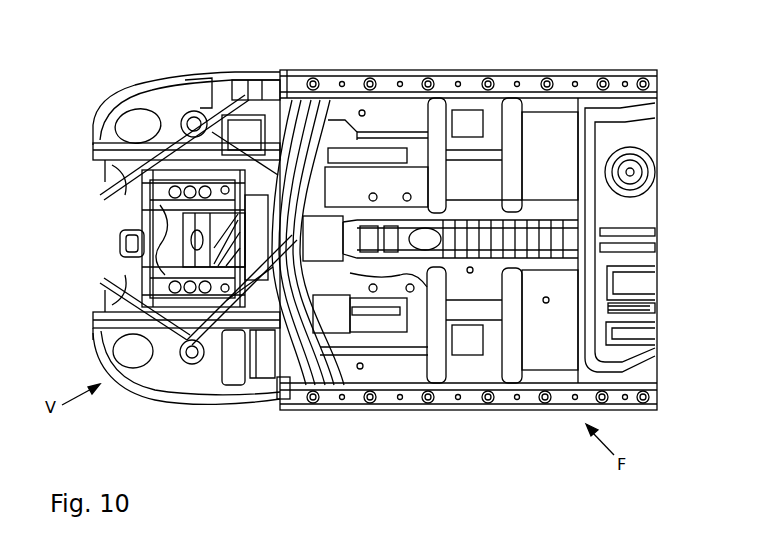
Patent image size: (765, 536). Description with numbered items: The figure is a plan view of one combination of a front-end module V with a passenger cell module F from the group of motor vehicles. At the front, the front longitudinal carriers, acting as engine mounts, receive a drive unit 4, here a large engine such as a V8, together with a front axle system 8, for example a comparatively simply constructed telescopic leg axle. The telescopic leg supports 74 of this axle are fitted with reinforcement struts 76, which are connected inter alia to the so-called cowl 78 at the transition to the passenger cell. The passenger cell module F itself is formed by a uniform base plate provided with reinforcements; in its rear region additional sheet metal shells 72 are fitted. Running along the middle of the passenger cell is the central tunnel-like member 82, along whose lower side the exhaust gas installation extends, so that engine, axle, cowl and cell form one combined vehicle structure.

The drive unit 4 is at (125, 235).
The front axle system 8 is at (585, 70).
The additional sheet metal shells 72 is at (640, 311).
The telescopic leg supports 74 is at (192, 110).
The reinforcement struts 76 is at (122, 172).
The cowl 78 is at (317, 80).
The central tunnel-like member 82 is at (537, 233).